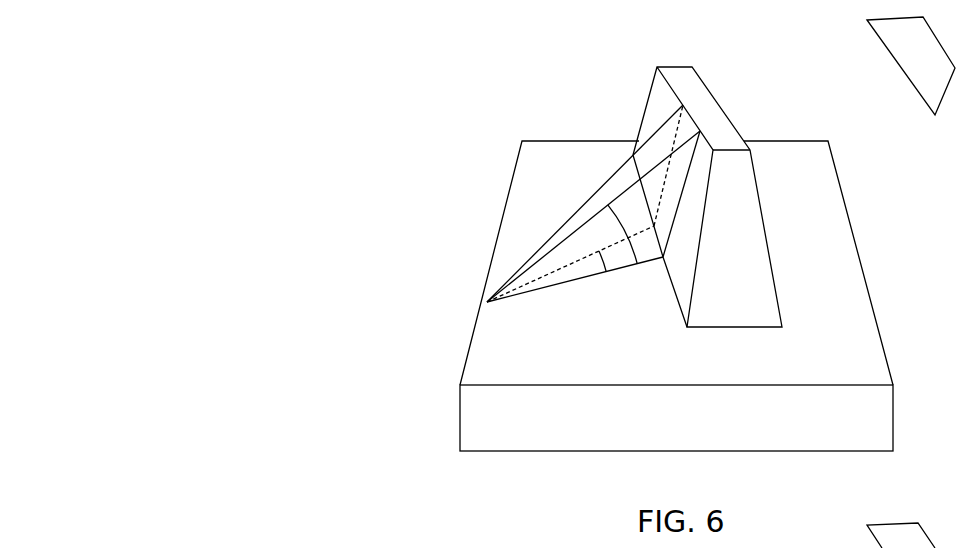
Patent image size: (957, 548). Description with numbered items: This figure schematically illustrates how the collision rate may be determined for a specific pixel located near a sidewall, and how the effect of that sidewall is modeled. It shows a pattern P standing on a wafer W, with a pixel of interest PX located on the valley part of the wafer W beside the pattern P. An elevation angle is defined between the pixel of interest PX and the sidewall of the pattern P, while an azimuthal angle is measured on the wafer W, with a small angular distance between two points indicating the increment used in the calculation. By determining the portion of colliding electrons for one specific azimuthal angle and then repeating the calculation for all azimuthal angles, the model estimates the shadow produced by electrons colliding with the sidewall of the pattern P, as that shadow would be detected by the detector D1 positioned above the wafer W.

The wafer W is at (676, 296).
The pattern P is at (707, 197).
The pixel of interest PX is at (487, 302).
The detector D1 is at (911, 66).